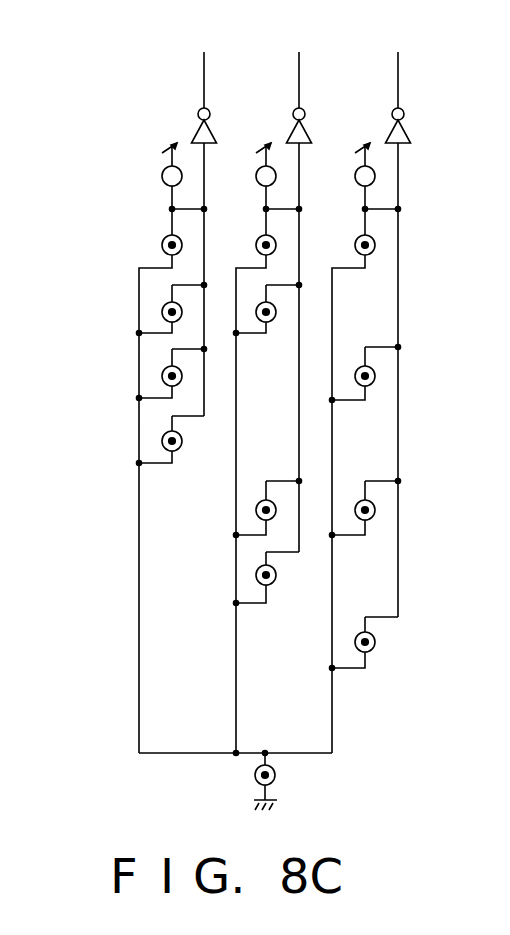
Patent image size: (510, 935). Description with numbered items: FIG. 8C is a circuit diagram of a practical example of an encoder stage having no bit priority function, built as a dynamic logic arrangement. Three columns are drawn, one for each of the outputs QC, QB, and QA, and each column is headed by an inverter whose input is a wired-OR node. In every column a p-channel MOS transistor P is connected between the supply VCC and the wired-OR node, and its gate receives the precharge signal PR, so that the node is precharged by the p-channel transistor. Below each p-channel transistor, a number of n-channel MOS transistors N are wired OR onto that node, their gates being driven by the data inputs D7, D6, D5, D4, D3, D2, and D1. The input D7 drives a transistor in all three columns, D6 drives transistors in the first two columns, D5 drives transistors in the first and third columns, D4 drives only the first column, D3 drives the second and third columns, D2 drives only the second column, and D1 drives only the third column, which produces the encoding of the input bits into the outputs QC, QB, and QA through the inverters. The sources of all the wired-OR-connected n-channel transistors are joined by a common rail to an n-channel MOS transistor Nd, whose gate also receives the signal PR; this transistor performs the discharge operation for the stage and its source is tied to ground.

The output QC is at (203, 213).
The output QB is at (299, 281).
The output QA is at (396, 313).
The supply voltage VCC is at (258, 140).
The precharge signal PR is at (385, 176).
The data input D7' D7 is at (71, 228).
The data input D6' D6 is at (71, 295).
The data input D5' D5 is at (71, 359).
The data input D4' D4 is at (71, 424).
The data input D3' D3 is at (71, 493).
The data input D2' D2 is at (71, 558).
The data input D1' D1 is at (71, 625).
The n-channel MOS transistor for a discharge operation Nd is at (275, 775).